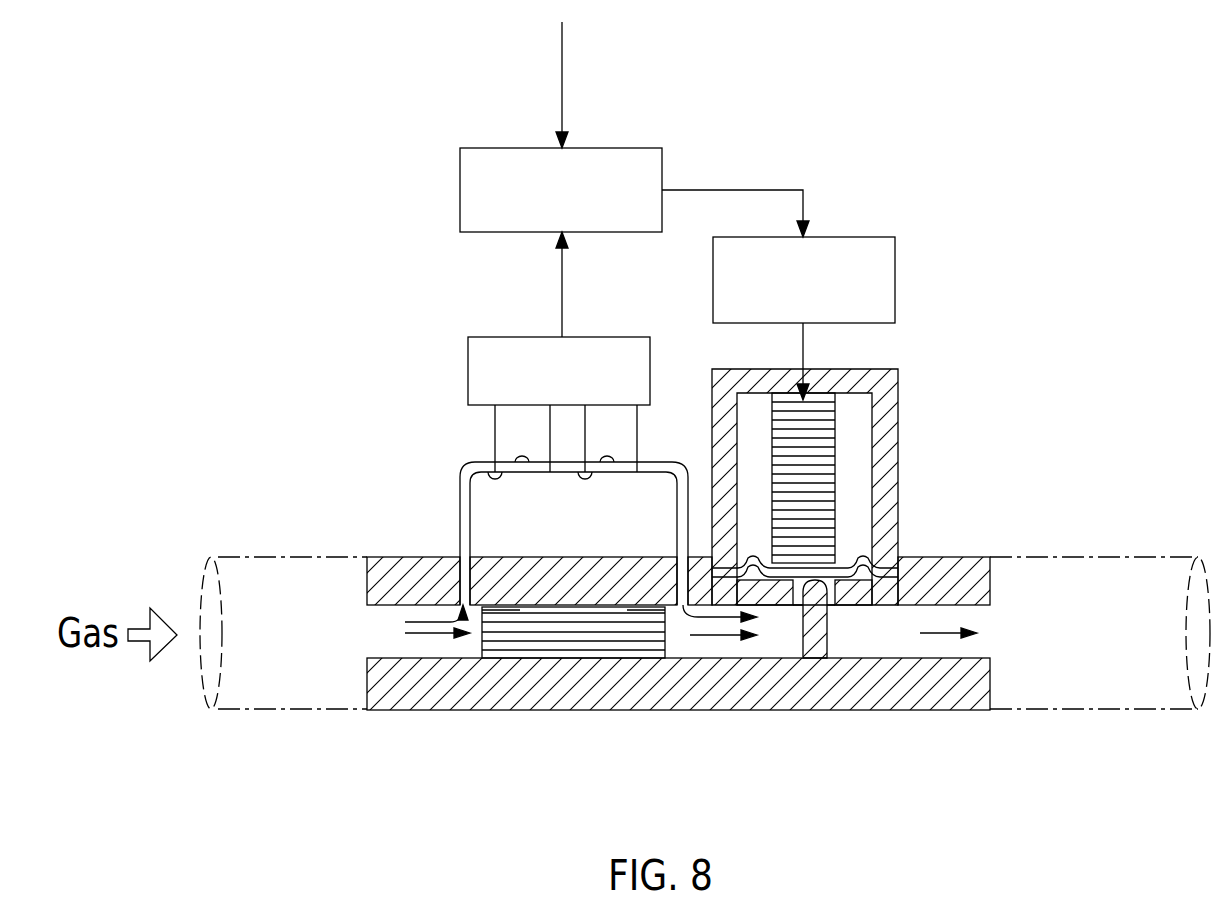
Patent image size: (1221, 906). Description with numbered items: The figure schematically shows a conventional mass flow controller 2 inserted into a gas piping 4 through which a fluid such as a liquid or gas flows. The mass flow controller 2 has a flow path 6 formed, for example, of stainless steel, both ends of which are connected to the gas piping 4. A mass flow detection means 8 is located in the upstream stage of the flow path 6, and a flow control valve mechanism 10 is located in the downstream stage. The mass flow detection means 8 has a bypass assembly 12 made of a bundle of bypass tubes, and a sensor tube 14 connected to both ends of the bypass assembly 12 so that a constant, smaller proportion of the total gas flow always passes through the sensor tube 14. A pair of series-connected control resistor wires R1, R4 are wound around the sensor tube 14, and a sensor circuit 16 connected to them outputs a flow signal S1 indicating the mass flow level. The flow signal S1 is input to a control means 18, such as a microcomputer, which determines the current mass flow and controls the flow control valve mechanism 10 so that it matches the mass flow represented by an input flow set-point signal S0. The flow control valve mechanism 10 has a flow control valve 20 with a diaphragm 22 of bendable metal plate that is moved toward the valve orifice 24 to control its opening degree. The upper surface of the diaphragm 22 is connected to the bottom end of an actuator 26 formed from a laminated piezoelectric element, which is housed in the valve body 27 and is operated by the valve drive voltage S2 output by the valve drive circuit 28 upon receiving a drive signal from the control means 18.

The mass flow controller 2 is at (700, 406).
The gas piping 4 is at (305, 710).
The flow path 6 is at (610, 700).
The mass flow detection means 8 is at (490, 469).
The flow control valve mechanism 10 is at (910, 572).
The bypass assembly 12 is at (530, 627).
The sensor tube 14 is at (458, 468).
The sensor circuit 16 is at (482, 337).
The control means 18 is at (640, 148).
The flow control valve 20 is at (858, 622).
The diaphragm 22 is at (893, 538).
The valve orifice 24 is at (828, 608).
The actuator 26 is at (810, 460).
The valve housing 27 is at (899, 380).
The valve drive circuit 28 is at (895, 262).
The flow set-point signal S0 is at (565, 70).
The flow signal S1 is at (565, 297).
The valve drive voltage S2 is at (805, 345).
The control resistor wire R1 is at (540, 478).
The control resistor wire R4 is at (628, 478).